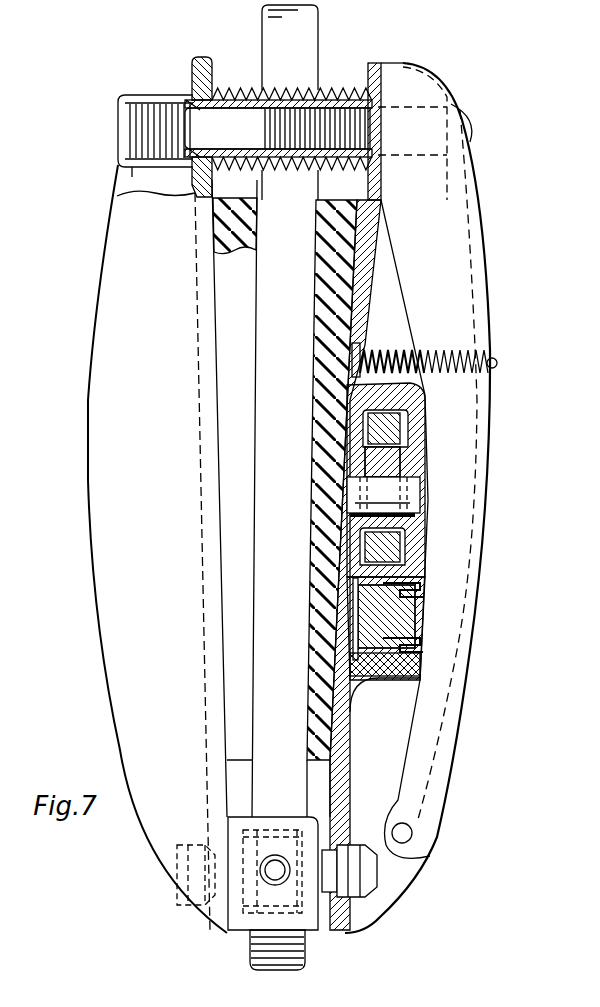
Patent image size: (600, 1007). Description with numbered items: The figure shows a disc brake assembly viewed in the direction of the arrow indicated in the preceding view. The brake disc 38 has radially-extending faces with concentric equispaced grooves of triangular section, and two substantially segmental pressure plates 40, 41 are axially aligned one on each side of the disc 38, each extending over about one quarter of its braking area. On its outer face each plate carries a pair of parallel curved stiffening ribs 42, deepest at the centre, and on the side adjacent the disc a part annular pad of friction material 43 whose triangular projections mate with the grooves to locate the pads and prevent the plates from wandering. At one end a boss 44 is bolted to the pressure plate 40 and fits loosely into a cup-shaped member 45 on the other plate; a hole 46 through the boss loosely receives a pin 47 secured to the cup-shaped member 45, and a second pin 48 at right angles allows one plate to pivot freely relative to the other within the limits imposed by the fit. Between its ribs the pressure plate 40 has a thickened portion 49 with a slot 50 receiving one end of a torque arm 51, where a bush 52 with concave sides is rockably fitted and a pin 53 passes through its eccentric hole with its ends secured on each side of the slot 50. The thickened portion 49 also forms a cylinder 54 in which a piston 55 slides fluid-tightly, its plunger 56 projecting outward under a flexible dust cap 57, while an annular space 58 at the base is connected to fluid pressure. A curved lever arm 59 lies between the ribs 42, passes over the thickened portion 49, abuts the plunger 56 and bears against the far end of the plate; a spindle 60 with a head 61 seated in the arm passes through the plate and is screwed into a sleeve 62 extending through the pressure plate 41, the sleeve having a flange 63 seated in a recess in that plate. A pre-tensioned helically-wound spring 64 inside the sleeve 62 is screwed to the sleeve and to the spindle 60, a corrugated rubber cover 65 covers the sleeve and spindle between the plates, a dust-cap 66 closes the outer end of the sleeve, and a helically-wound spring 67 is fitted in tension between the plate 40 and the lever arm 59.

The disc 38 is at (313, 43).
The pressure plate 40 is at (376, 262).
The pressure plate 41 is at (197, 294).
The stiffening ribs 42 is at (98, 405).
The pad of friction material 43 is at (318, 450).
The boss 44 is at (313, 922).
The cup-shaped member 45 is at (238, 927).
The hole 46 is at (297, 820).
The pin 47 is at (282, 837).
The pin 48 is at (260, 865).
The thickened portion 49 is at (392, 397).
The slot 50 is at (403, 432).
The torque arm 51 is at (392, 548).
The bush 52 is at (392, 462).
The pin 53 is at (410, 497).
The cylinder 54 is at (413, 676).
The piston 55 is at (375, 652).
The plunger 56 is at (415, 625).
The flexible dust cap 57 is at (425, 588).
The annular space 58 is at (348, 658).
The curved lever arm 59 is at (447, 222).
The spindle 60 is at (412, 123).
The head 61 is at (466, 118).
The sleeve 62 is at (243, 90).
The flange 63 is at (200, 100).
The pre-tensioned helically-wound spring 64 is at (198, 97).
The corrugated rubber cover 65 is at (340, 90).
The dust-cap 66 is at (126, 104).
The helically-wound spring 67 is at (380, 352).